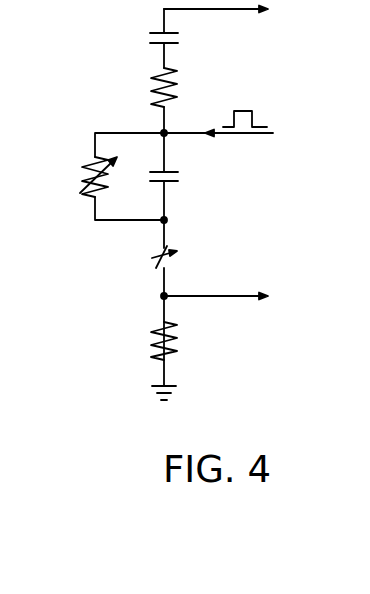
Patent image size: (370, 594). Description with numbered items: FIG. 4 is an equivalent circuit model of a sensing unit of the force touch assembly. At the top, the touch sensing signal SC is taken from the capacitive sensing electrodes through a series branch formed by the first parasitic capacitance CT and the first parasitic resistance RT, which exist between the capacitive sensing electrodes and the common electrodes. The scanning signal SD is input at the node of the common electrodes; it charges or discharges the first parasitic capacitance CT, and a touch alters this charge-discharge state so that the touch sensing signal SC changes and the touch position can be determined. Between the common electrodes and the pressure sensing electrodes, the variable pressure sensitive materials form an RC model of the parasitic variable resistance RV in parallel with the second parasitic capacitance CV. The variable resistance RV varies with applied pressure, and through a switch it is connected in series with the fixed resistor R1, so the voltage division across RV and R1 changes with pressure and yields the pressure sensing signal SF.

The touch sensing signal SC is at (233, 14).
The first parasitic capacitance CT is at (149, 44).
The first parasitic resistance RT is at (148, 89).
The scanning signal SD is at (234, 131).
The parasitic variable resistance RV is at (107, 176).
The second parasitic capacitance CV is at (147, 181).
The pressure sensing signal SF is at (232, 300).
The resistor R1 is at (148, 340).